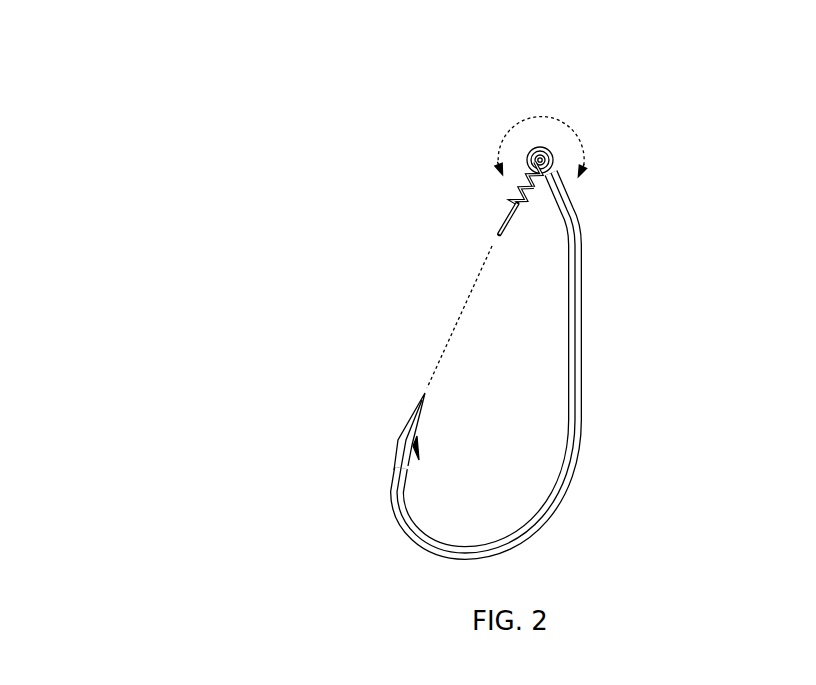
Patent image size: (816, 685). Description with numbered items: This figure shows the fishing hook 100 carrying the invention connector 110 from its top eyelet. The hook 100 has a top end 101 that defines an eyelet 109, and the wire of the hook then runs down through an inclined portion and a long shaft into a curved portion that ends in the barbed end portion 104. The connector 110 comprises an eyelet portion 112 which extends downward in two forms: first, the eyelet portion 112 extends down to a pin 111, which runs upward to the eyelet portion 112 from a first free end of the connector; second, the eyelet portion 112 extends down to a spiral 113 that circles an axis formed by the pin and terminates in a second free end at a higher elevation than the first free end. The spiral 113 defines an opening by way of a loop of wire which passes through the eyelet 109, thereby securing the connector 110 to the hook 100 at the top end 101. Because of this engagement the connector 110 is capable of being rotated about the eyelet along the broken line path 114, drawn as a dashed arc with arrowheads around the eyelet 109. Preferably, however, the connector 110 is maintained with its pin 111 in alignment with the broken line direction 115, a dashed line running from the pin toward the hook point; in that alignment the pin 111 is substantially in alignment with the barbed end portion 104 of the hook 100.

The fishing hook 100 is at (405, 313).
The top end 101 is at (561, 181).
The barbed end portion 104 is at (383, 482).
The eyelet 109 is at (555, 142).
The connector 110 is at (290, 172).
The pin 111 is at (479, 230).
The eyelet portion 112 is at (517, 150).
The spiral 113 is at (438, 145).
The broken line path 114 is at (541, 128).
The broken line direction 115 is at (437, 328).